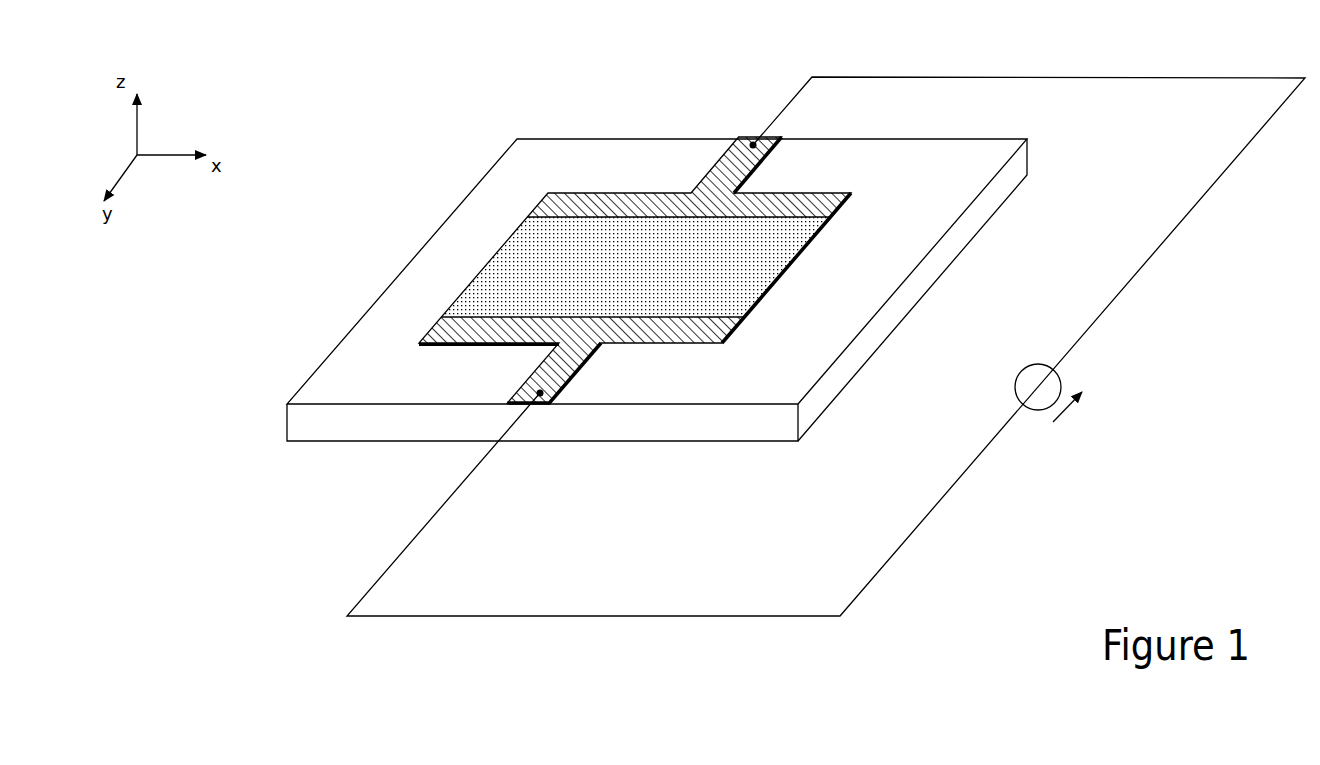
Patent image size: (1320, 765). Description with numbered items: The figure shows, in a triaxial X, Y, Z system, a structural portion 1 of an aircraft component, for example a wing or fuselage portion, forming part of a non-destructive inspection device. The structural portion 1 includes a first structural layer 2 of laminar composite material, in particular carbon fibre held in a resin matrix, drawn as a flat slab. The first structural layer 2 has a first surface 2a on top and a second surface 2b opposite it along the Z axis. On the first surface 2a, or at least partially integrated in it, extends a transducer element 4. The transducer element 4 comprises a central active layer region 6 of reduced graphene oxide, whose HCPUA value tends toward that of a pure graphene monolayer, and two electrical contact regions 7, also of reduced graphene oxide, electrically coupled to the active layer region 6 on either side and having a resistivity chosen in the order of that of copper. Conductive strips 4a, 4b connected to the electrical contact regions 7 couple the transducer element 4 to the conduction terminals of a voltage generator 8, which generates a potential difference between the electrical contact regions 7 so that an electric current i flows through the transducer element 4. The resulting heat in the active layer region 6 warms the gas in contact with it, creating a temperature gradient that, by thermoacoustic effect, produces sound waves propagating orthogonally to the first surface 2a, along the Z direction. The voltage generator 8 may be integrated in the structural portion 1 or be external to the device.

The structural portion 1 is at (627, 286).
The first structural layer 2 is at (627, 286).
The first surface 2a is at (540, 157).
The second surface 2b is at (349, 445).
The transducer element 4 is at (586, 241).
The conductive strip 4a is at (560, 384).
The conductive strip 4b is at (752, 142).
The active layer region 6 is at (727, 250).
The electrical contact regions 7 is at (833, 200).
The voltage generator 8 is at (1040, 366).